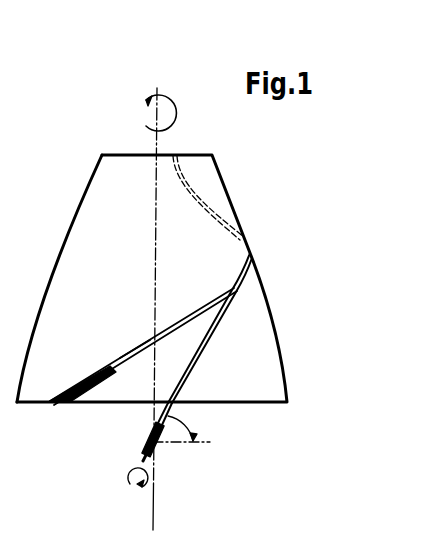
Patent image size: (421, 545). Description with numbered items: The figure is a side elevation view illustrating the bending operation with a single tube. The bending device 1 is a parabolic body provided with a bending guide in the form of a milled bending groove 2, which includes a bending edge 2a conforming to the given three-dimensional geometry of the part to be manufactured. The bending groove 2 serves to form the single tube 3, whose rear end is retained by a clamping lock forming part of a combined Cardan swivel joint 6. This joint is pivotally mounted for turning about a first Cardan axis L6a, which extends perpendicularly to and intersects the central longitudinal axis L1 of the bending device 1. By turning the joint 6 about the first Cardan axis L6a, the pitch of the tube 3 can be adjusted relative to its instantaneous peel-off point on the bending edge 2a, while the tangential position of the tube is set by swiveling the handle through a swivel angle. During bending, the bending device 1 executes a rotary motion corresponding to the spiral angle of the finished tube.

The bending device 1 is at (58, 236).
The bending groove 2 is at (171, 339).
The bending edge 2a is at (125, 357).
The single tube 3 is at (221, 323).
The combined Cardan swivel joint 6 is at (157, 452).
The first Cardan axis L6a is at (150, 440).
The central longitudinal axis of bending device L1 is at (155, 515).